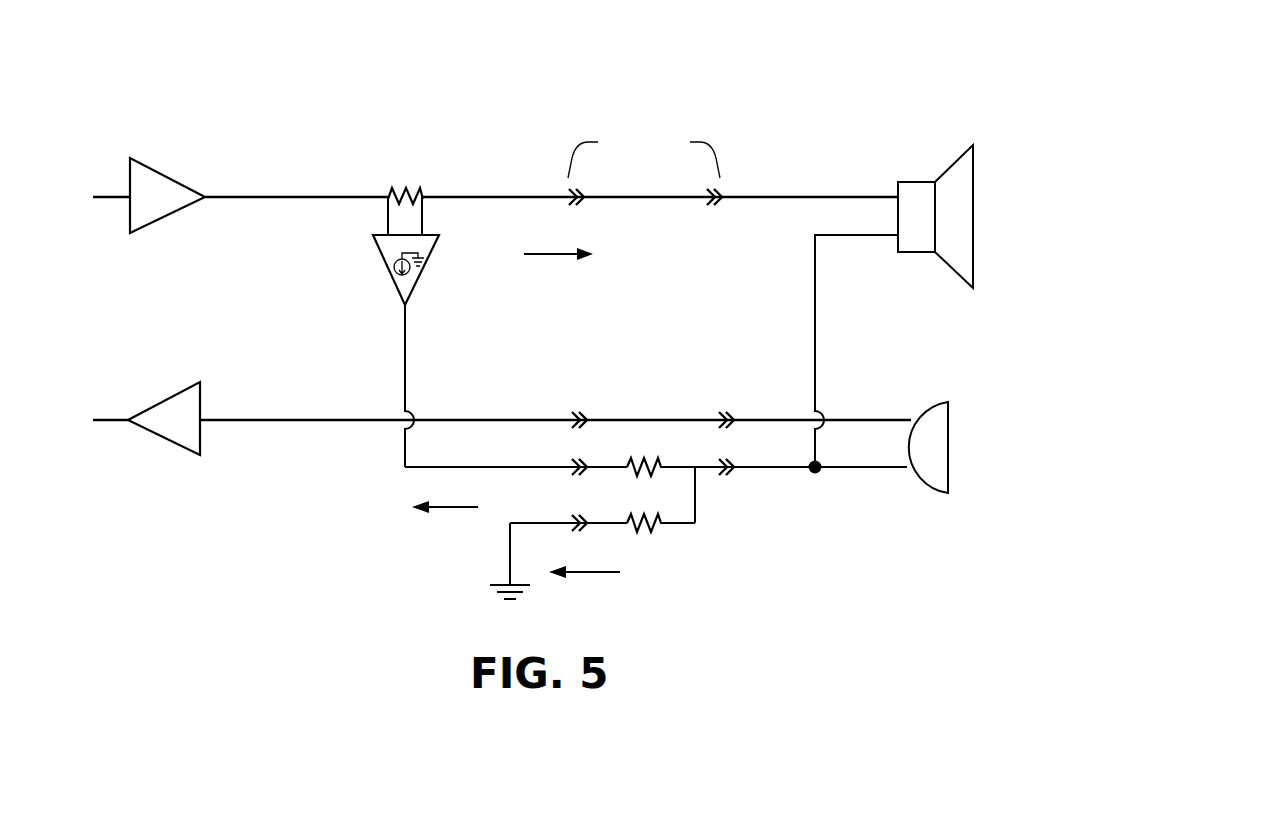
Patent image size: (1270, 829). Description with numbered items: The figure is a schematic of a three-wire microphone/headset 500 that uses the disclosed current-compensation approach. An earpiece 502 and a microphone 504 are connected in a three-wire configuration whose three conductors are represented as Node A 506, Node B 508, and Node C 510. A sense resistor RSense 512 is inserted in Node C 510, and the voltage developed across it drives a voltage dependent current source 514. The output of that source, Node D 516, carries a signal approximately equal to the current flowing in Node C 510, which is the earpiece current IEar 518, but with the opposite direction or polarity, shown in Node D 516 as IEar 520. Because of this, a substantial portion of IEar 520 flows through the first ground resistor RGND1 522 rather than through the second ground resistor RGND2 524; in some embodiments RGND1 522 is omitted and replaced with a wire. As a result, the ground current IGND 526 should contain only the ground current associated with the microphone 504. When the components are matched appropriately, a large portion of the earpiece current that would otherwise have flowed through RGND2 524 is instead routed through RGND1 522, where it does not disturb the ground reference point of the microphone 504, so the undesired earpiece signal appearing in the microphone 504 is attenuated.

The three-wire microphone/headset 500 is at (1184, 102).
The earpiece 502 is at (975, 198).
The microphone 504 is at (950, 430).
The Node A 506 is at (818, 322).
The Node B 508 is at (742, 419).
The Node C 510 is at (770, 197).
The sense resistor RSense 512 is at (390, 150).
The voltage dependent current source 514 is at (385, 272).
The Node D 516 is at (406, 345).
The earpiece current IEar 518 is at (557, 257).
The earpiece current IEar in Node D 520 is at (455, 510).
The first ground resistor RGND1 522 is at (637, 472).
The second ground resistor RGND2 524 is at (660, 527).
The ground current IGND 526 is at (585, 575).